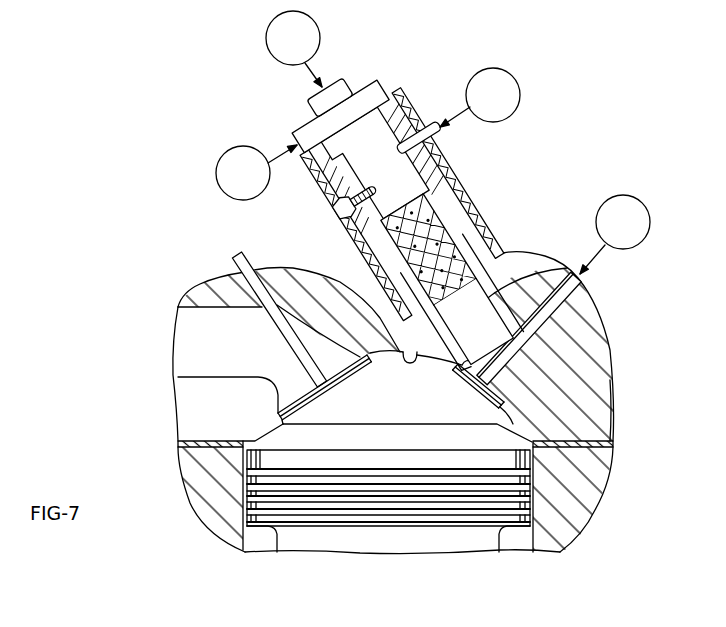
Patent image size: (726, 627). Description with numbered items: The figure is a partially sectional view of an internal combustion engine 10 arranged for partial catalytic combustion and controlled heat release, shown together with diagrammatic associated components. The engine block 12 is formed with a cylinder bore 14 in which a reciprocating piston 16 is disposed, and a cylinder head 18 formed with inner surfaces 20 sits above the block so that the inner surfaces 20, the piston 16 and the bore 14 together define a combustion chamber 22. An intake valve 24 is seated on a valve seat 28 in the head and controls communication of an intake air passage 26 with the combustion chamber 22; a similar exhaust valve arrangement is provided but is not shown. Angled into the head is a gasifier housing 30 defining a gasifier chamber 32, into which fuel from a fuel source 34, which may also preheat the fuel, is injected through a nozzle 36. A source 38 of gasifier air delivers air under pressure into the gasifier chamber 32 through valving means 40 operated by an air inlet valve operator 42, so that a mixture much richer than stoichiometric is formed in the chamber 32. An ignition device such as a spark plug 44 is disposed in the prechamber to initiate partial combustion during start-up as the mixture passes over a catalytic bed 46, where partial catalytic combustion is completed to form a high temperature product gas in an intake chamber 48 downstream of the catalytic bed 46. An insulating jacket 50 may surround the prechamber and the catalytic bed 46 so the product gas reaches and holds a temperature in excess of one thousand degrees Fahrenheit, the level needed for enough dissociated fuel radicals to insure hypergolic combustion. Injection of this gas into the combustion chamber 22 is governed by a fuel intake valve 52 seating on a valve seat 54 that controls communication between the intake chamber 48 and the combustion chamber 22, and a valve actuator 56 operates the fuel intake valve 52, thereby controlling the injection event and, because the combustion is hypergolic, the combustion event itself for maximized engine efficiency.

The internal combustion engine 10 is at (126, 320).
The engine block 12 is at (598, 474).
The cylinder bore 14 is at (530, 546).
The piston 16 is at (444, 549).
The cylinder head 18 is at (604, 412).
The inner surfaces 20 is at (359, 195).
The combustion chamber 22 is at (365, 416).
The intake valve 24 is at (275, 328).
The intake air passage 26 is at (238, 369).
The valve seat 28 is at (358, 355).
The gasifier housing 30 is at (330, 188).
The gasifier chamber 32 is at (386, 164).
The fuel source 34 is at (548, 84).
The nozzle 36 is at (413, 123).
The source of gasifier air 38 is at (272, 50).
The valving means 40 is at (300, 125).
The air inlet valve operator 42 is at (216, 165).
The spark plug 44 is at (332, 198).
The catalytic bed 46 is at (432, 207).
The intake chamber 48 is at (492, 319).
The insulating jacket 50 is at (470, 203).
The fuel intake valve 52 is at (478, 396).
The valve seat 54 is at (462, 370).
The valve actuator 56 is at (650, 212).